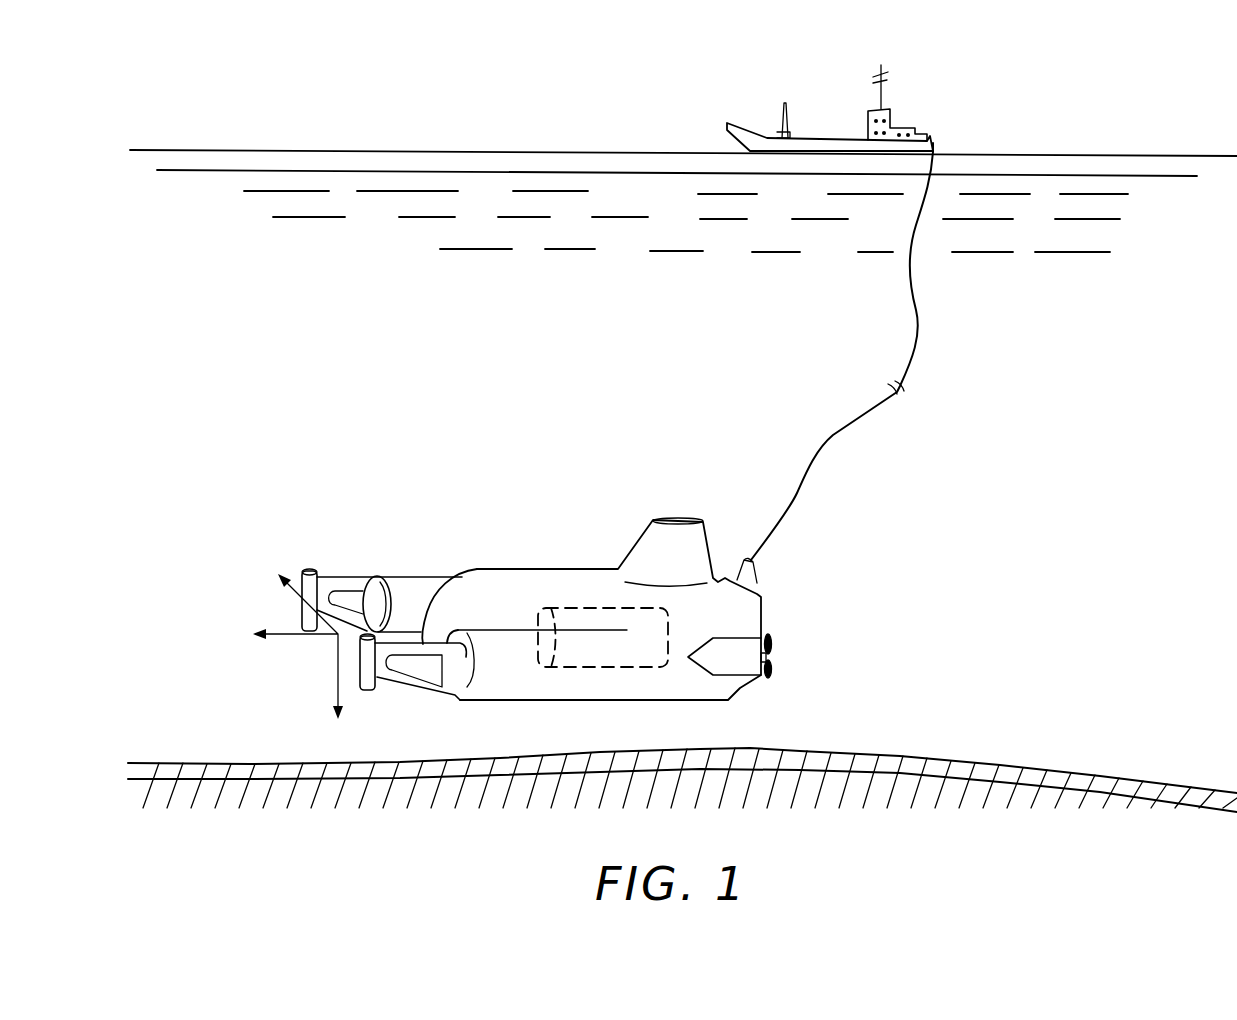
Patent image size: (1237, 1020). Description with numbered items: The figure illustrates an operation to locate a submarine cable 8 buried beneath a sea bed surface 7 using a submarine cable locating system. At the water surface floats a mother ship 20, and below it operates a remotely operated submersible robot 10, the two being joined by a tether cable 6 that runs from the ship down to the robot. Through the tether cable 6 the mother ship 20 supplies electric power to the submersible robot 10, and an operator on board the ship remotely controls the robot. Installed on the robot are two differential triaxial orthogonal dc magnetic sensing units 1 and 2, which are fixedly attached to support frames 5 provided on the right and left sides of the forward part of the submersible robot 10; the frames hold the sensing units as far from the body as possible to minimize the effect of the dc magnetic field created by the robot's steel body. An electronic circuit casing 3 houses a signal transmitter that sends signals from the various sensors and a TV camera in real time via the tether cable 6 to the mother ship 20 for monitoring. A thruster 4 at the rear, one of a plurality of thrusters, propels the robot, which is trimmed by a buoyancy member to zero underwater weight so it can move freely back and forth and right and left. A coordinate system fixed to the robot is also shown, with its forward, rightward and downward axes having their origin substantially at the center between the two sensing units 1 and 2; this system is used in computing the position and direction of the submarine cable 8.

The mother ship 20 is at (818, 86).
The remotely operated submersible robot 10 is at (524, 619).
The tether cable 6 is at (833, 437).
The differential triaxial orthogonal dc magnetic sensing unit 1 is at (314, 571).
The differential triaxial orthogonal dc magnetic sensing unit 2 is at (363, 688).
The electronic circuit casing 3 is at (613, 668).
The thruster 4 is at (773, 641).
The support frame 5 is at (338, 586).
The sea bed surface 7 is at (1038, 766).
The submarine cable 8 is at (898, 758).